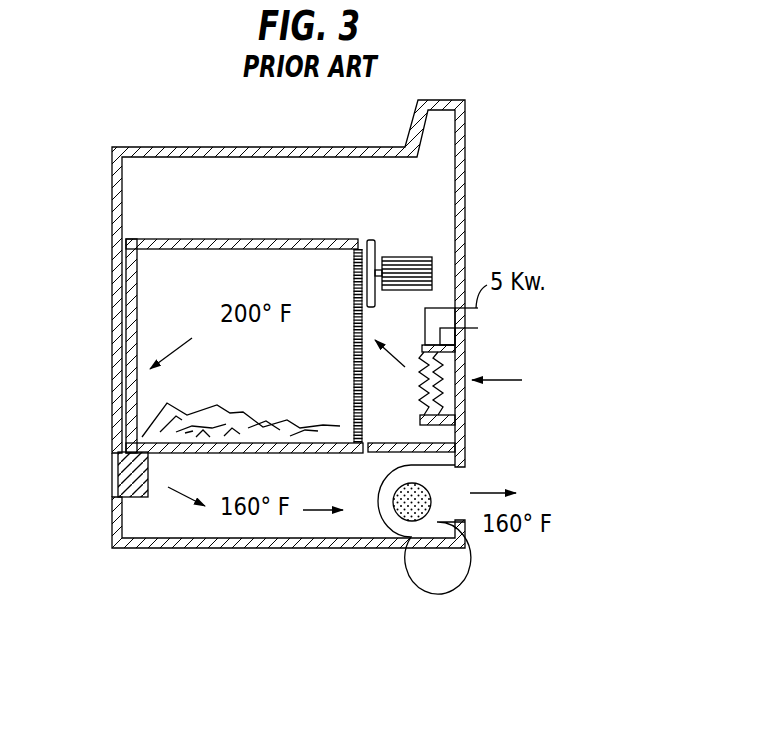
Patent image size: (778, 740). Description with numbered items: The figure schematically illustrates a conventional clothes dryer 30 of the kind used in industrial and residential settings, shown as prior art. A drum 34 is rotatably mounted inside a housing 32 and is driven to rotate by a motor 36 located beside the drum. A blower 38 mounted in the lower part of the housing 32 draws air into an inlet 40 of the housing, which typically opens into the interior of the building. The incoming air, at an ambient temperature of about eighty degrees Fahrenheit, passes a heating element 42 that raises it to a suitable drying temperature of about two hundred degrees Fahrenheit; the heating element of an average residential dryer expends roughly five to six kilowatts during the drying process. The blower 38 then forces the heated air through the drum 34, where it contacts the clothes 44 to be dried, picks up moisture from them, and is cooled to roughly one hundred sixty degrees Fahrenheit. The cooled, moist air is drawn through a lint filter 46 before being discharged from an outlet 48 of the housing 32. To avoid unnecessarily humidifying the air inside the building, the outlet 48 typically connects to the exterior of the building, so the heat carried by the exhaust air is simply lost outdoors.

The clothes dryer 30 is at (482, 158).
The housing 32 is at (466, 226).
The drum 34 is at (145, 239).
The motor 36 is at (404, 257).
The blower 38 is at (415, 522).
The inlet 40 is at (456, 414).
The heating element 42 is at (446, 371).
The clothes 44 is at (200, 422).
The lint filter 46 is at (129, 482).
The outlet 48 is at (457, 469).